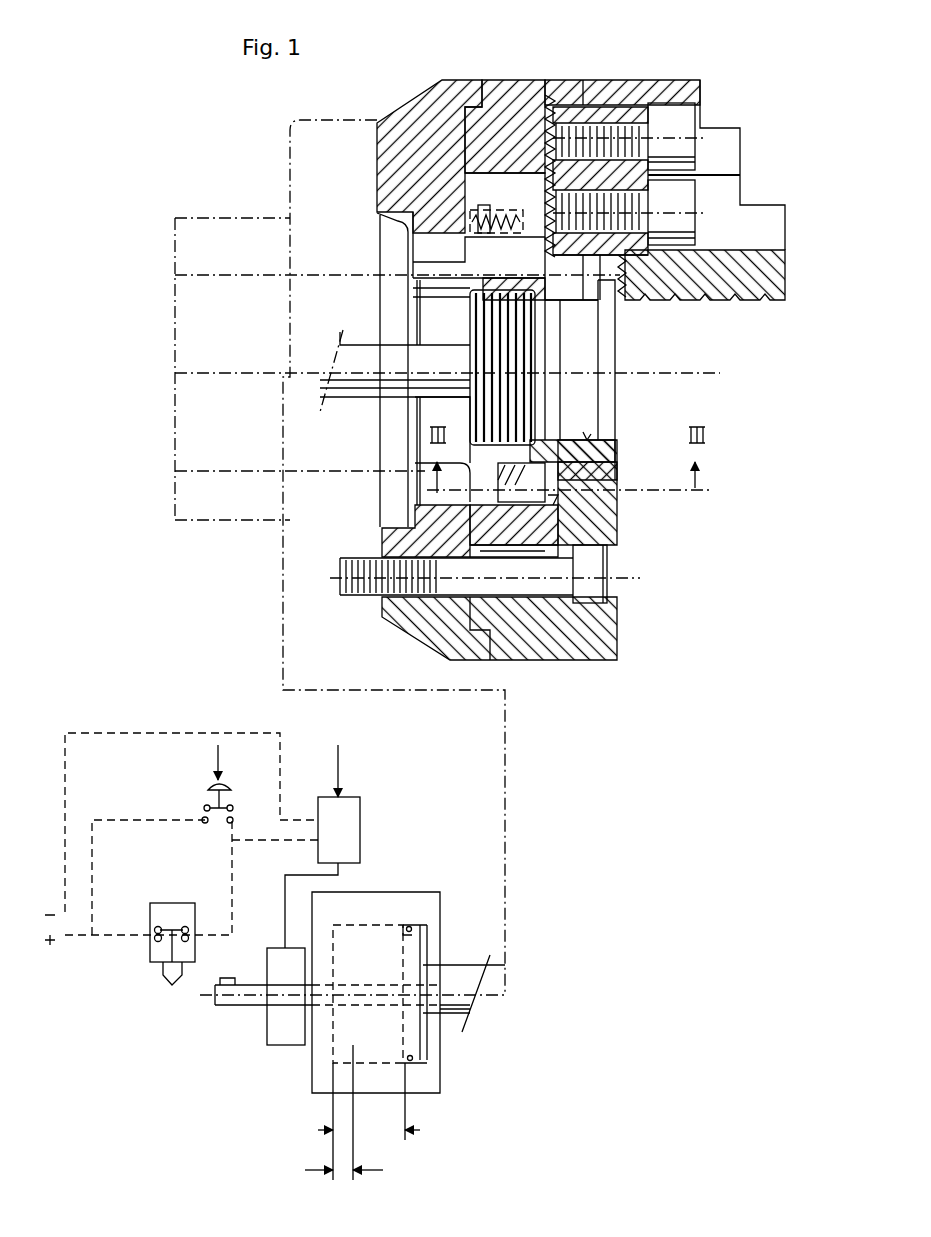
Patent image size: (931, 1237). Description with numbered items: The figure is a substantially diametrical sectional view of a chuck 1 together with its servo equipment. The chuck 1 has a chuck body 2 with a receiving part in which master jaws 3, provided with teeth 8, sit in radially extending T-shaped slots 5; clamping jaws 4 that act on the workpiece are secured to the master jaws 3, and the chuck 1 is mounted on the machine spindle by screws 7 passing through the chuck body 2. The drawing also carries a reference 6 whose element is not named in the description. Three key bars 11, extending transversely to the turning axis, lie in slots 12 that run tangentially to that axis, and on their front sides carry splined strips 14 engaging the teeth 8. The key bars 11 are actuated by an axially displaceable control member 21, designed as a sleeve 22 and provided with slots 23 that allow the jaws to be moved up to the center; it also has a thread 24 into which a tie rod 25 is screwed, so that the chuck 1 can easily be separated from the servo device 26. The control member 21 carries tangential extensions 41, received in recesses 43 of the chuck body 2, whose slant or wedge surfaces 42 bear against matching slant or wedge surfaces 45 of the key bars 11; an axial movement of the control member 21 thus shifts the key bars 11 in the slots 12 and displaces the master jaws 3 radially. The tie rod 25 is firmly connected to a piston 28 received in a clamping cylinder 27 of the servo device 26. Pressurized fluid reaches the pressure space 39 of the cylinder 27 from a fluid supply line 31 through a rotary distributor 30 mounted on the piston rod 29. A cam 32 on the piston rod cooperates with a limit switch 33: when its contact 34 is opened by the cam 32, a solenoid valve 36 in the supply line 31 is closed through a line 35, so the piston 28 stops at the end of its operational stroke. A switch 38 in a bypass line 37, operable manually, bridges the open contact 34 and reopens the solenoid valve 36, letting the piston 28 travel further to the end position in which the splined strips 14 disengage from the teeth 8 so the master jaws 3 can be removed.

The chuck 1 is at (707, 457).
The chuck body 2 is at (503, 78).
The master jaws 3 is at (627, 105).
The clamping jaws 4 is at (712, 300).
The T-shaped slots 5 is at (565, 80).
The jaw 6 is at (210, 246).
The screws 7 is at (600, 583).
The teeth 8 is at (546, 92).
The key bars 11 is at (565, 530).
The slots 12 is at (485, 172).
The splined strips 14 is at (483, 82).
The control member 21 is at (588, 432).
The sleeve 22 is at (612, 455).
The slots 23 is at (590, 300).
The thread 24 is at (467, 447).
The tie rod 25 is at (360, 353).
The servo device 26 is at (420, 1093).
The clamping cylinder 27 is at (415, 1078).
The piston 28 is at (418, 1040).
The piston rod 29 is at (248, 993).
The rotary distributor 30 is at (283, 1047).
The fluid supply line 31 is at (338, 760).
The cam 32 is at (213, 983).
The limit switch 33 is at (162, 977).
The contact 34 is at (172, 925).
The line 35 is at (110, 937).
The solenoid valve 36 is at (360, 797).
The bypass line 37 is at (117, 820).
The switch 38 is at (213, 782).
The pressure space 39 is at (420, 925).
The extensions 41 is at (528, 455).
The slant or wedge surfaces 42 is at (400, 472).
The recesses 43 is at (583, 435).
The slant or wedge surfaces 45 is at (445, 492).